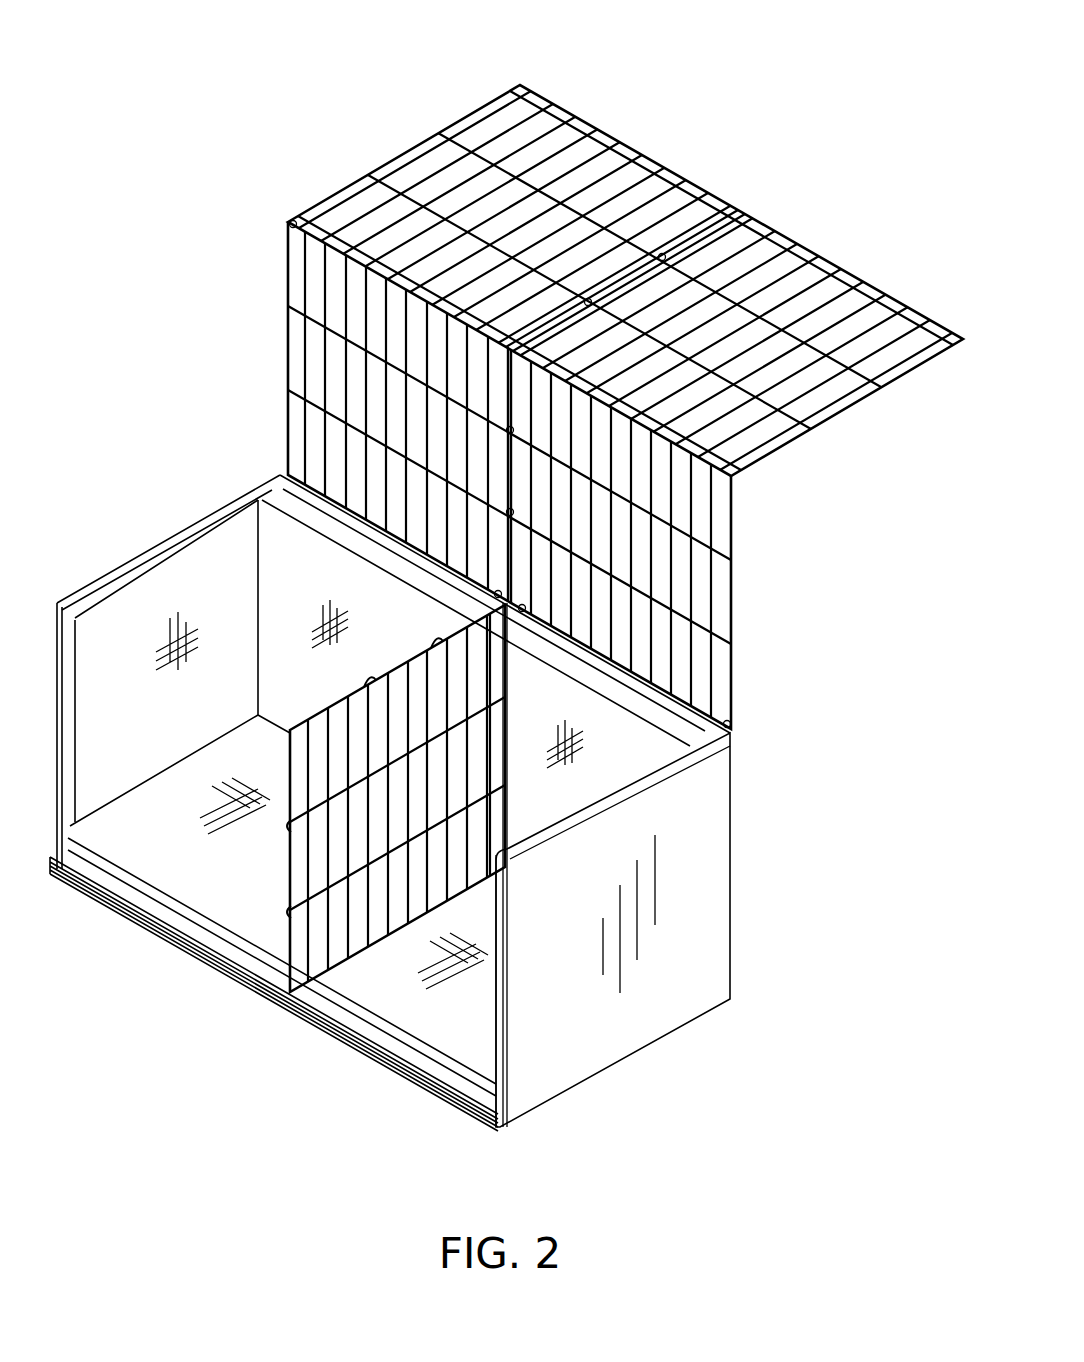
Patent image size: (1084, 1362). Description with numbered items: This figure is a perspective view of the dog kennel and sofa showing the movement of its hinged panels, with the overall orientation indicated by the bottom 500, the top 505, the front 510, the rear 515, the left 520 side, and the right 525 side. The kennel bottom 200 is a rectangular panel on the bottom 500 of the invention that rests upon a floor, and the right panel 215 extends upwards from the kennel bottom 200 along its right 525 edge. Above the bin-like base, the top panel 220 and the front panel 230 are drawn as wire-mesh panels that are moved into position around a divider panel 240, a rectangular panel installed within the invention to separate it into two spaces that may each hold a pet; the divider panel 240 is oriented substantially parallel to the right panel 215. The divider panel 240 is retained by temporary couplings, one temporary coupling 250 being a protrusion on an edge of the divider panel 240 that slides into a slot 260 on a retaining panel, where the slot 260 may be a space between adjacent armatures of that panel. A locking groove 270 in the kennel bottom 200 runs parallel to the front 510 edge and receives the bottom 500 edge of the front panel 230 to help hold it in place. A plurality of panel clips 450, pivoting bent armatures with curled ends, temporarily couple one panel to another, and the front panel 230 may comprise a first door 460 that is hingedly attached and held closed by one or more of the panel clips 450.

The kennel bottom 200 is at (88, 897).
The right panel 215 is at (705, 860).
The top panel 220 is at (735, 583).
The front panel 230 is at (808, 248).
The divider panel 240 is at (303, 932).
The temporary coupling 250 is at (370, 676).
The slot 260 is at (508, 510).
The locking groove 270 is at (500, 1123).
The panel clips 450 is at (287, 913).
The first door 460 is at (662, 253).
The bottom 500 is at (322, 1145).
The top 505 is at (295, 100).
The front 510 is at (158, 1108).
The rear 515 is at (862, 519).
The left side 520 is at (160, 452).
The right side 525 is at (757, 1142).